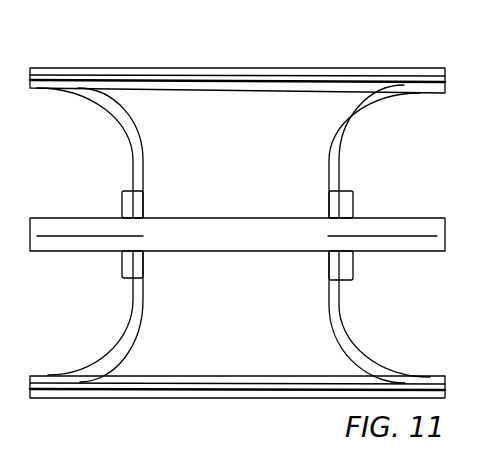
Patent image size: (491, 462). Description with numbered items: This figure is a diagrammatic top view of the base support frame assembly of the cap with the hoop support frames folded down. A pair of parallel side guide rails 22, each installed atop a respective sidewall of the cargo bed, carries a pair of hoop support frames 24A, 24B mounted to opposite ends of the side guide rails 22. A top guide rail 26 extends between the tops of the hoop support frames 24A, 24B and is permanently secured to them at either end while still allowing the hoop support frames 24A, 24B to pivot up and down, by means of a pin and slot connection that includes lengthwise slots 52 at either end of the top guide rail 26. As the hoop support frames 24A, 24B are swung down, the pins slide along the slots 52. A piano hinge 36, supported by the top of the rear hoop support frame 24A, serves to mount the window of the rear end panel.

The side guide rails 22 is at (94, 65).
The hoop support frame 24A is at (338, 118).
The hoop support frame 24B is at (130, 111).
The top guide rail 26 is at (213, 253).
The piano hinge 36 is at (337, 191).
The lengthwise slots 52 is at (62, 230).